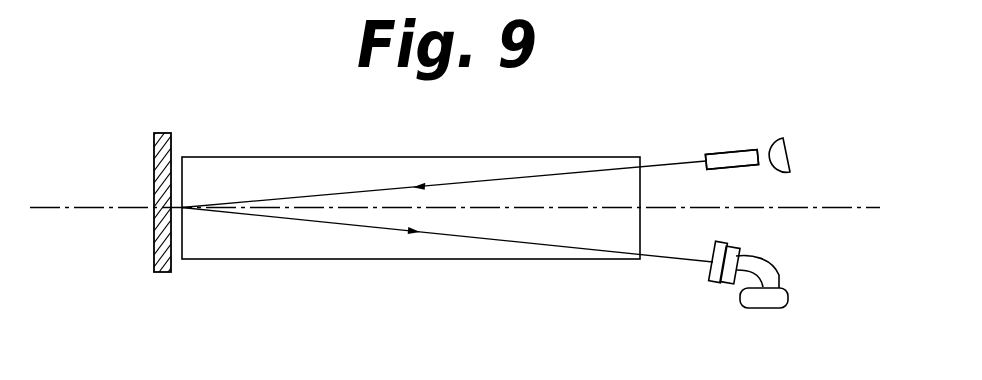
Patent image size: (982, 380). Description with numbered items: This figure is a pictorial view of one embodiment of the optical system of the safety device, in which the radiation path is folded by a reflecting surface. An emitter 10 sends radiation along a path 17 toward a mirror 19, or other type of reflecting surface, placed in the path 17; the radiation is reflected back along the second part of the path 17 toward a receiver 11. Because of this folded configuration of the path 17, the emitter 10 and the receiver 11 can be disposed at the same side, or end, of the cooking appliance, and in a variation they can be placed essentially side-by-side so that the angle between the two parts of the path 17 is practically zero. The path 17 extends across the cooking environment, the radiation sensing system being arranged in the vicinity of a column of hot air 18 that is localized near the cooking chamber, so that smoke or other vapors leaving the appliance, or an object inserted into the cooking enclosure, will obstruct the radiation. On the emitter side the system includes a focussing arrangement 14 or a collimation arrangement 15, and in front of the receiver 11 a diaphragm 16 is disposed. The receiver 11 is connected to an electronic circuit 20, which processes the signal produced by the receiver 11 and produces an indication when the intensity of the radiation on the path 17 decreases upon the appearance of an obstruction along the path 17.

The emitter 10 is at (790, 152).
The receiver 11 is at (729, 283).
The focussing arrangement 14 is at (724, 160).
The collimation arrangement 15 is at (731, 160).
The diaphragm 16 is at (711, 264).
The path 17 is at (317, 195).
The column of hot air 18 is at (407, 259).
The mirror 19 is at (154, 253).
The electronic circuit 20 is at (770, 307).